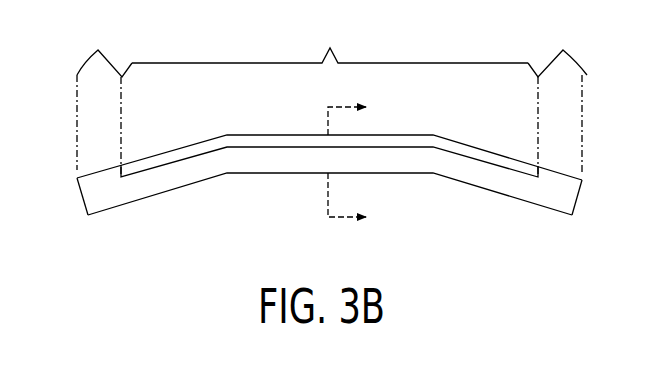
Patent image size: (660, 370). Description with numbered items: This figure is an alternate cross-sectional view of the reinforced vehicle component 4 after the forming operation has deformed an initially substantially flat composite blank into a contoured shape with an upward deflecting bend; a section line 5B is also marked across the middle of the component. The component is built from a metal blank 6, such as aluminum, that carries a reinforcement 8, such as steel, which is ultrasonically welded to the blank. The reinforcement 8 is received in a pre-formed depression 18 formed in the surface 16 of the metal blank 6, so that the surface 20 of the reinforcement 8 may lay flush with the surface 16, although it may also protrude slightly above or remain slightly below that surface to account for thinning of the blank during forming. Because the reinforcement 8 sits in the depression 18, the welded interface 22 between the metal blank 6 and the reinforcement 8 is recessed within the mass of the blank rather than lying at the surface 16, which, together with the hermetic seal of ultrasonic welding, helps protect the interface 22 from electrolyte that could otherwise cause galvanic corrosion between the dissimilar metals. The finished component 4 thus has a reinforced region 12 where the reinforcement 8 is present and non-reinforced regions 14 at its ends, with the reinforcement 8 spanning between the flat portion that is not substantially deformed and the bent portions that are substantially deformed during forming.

The reinforced vehicle component 4 is at (330, 159).
The metal blank 6 is at (300, 167).
The reinforcement 8 is at (185, 156).
The reinforced region 12 is at (330, 42).
The non-reinforced region 14 is at (332, 99).
The surface 16 is at (103, 165).
The pre-formed depression 18 is at (502, 136).
The surface of the reinforcement 20 is at (291, 133).
The welded interface 22 is at (470, 167).
The section line 5B is at (364, 161).